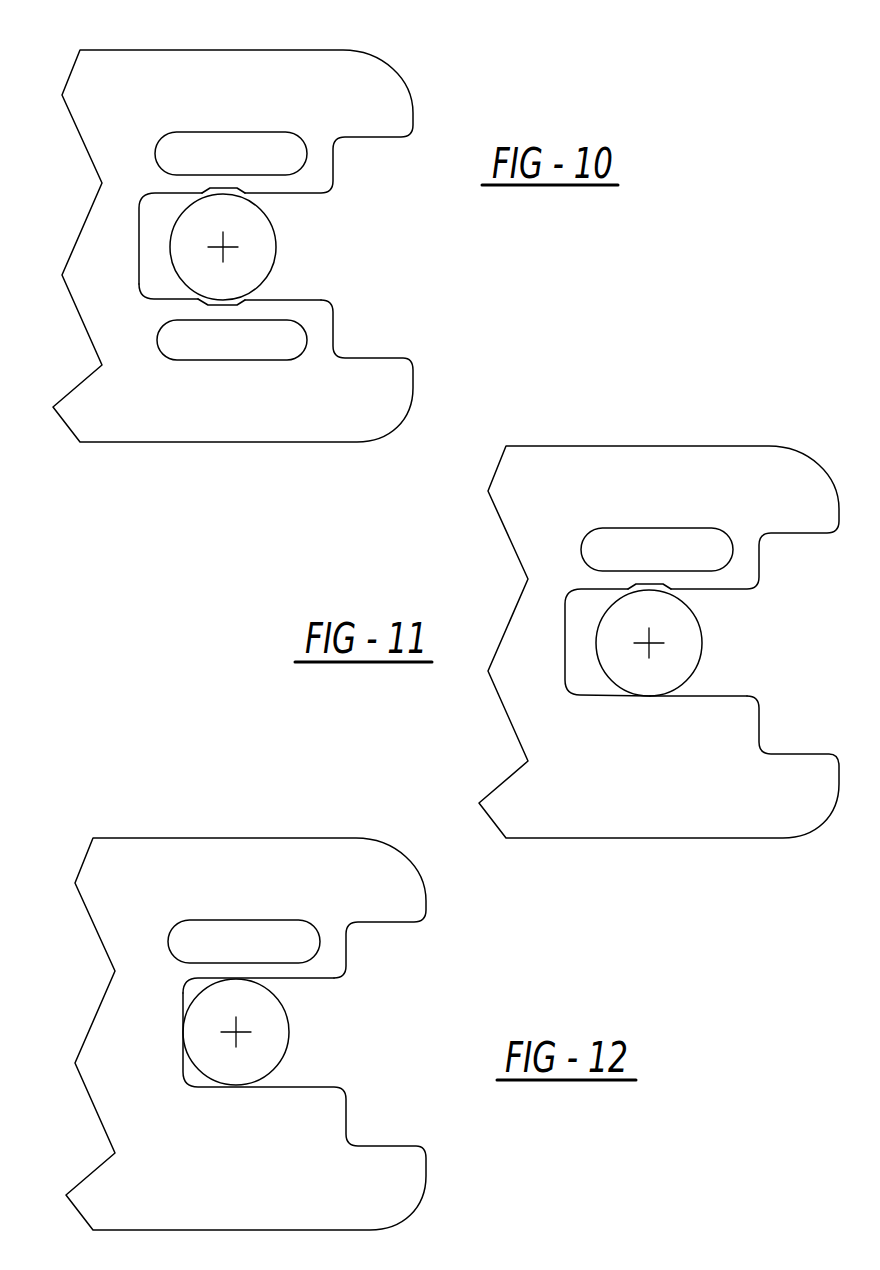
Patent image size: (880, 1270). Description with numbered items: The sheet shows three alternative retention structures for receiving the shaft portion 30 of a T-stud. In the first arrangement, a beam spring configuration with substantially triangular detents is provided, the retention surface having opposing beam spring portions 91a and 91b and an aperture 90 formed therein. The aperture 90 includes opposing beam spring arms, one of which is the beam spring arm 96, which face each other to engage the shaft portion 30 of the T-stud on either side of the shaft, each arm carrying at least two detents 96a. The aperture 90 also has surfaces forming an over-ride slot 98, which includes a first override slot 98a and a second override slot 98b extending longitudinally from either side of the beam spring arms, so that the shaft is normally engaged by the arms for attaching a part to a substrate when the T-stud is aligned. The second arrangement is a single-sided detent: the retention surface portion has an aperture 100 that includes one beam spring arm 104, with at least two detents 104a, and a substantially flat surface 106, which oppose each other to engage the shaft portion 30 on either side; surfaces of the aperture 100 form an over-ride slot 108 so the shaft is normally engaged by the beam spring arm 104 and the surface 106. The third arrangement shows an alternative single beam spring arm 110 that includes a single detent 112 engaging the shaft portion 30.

In FIG. 10, the shaft portion 30 is at (277, 258).
In FIG. 11, the shaft portion 30 is at (702, 633).
In FIG. 12, the shaft portion 30 is at (290, 1027).
In FIG. 10, the aperture 90 is at (278, 195).
In FIG. 10, the beam spring portion 91a is at (247, 130).
In FIG. 10, the beam spring portion 91b is at (202, 333).
In FIG. 10, the beam spring arm 96 is at (202, 192).
In FIG. 10, the detent 96a is at (204, 196).
In FIG. 10, the over-ride slot 98 is at (138, 255).
In FIG. 10, the first override slot 98a is at (175, 303).
In FIG. 10, the second override slot 98b is at (285, 305).
In FIG. 11, the aperture 100 is at (715, 590).
In FIG. 11, the beam spring arm 104 is at (672, 589).
In FIG. 11, the detent 104a is at (628, 595).
In FIG. 11, the substantially flat surface 106 is at (699, 694).
In FIG. 11, the over-ride slot 108 is at (566, 653).
In FIG. 12, the single beam spring arm 110 is at (246, 974).
In FIG. 12, the single detent 112 is at (257, 982).